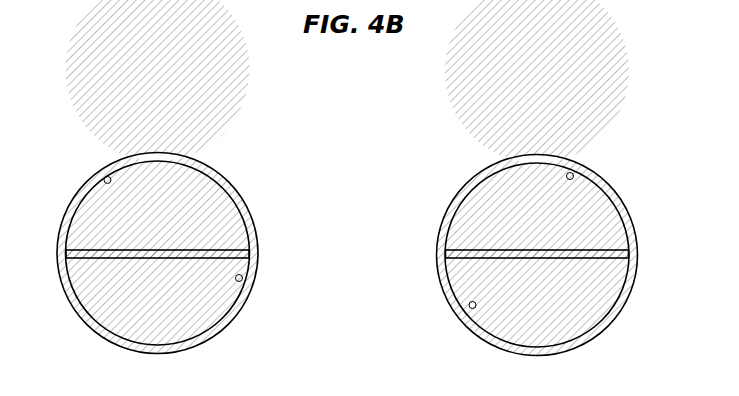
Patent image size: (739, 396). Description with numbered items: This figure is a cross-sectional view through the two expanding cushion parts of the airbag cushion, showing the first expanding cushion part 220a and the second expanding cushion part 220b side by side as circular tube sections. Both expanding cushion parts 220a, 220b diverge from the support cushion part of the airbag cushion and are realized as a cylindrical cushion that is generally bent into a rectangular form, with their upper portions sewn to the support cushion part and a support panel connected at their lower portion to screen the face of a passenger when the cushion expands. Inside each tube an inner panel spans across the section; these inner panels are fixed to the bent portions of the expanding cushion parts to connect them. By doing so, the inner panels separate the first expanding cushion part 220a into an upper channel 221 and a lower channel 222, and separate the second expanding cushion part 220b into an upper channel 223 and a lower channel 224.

The first expanding cushion part 220a is at (173, 156).
The second expanding cushion part 220b is at (533, 158).
The upper channel 221 is at (107, 178).
The lower channel 222 is at (252, 289).
The upper channel 223 is at (577, 173).
The lower channel 224 is at (457, 313).